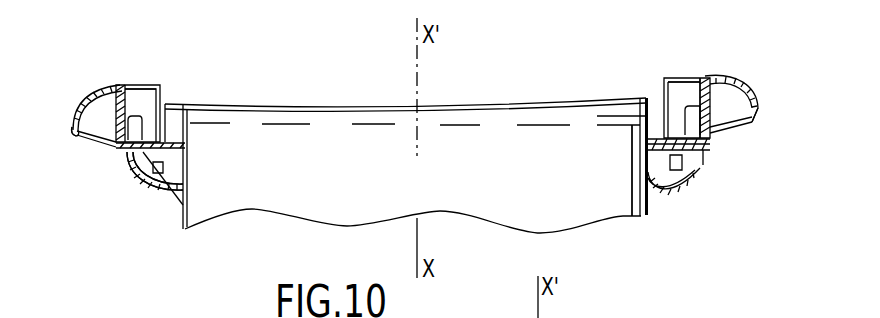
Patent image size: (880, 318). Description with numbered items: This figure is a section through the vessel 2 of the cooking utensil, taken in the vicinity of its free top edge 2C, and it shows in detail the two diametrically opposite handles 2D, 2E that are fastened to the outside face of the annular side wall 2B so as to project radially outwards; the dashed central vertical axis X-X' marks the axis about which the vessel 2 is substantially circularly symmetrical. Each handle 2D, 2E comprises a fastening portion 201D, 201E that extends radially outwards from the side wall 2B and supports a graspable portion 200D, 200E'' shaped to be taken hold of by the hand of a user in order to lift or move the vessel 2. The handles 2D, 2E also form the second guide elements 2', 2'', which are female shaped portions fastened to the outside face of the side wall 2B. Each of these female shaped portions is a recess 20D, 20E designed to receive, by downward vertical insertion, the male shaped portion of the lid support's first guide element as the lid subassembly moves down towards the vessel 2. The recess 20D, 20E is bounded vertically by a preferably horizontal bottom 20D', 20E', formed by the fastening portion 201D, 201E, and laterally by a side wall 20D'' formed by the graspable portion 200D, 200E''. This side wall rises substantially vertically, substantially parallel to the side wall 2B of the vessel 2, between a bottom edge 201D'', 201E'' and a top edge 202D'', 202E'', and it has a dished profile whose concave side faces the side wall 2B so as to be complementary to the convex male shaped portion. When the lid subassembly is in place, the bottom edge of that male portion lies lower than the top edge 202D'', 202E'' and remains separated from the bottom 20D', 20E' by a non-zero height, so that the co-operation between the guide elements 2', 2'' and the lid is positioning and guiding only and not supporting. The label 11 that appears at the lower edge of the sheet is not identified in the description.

The vessel 2 is at (672, 183).
The second guide element 2' is at (688, 48).
The second guide element 2'' is at (161, 87).
The annular side wall 2B is at (207, 195).
The free top edge 2C is at (340, 108).
The vessel handle 2D is at (757, 116).
The vessel handle 2E is at (83, 95).
The element 11 is at (606, 317).
The recess 20D is at (663, 99).
The bottom of recess 20D' is at (647, 98).
The side wall of recess 20D'' is at (767, 91).
The recess 20E is at (182, 101).
The bottom of recess 20E' is at (117, 185).
The graspable portion 200D is at (762, 100).
The graspable portion 200E'' is at (75, 158).
The fastening portion 201D is at (709, 194).
The bottom edge of recess side wall 201D'' is at (600, 196).
The fastening portion 201E is at (150, 219).
The bottom edge of recess side wall 201E'' is at (128, 203).
The top edge of recess side wall 202D'' is at (747, 82).
The top edge of recess side wall 202E'' is at (118, 55).